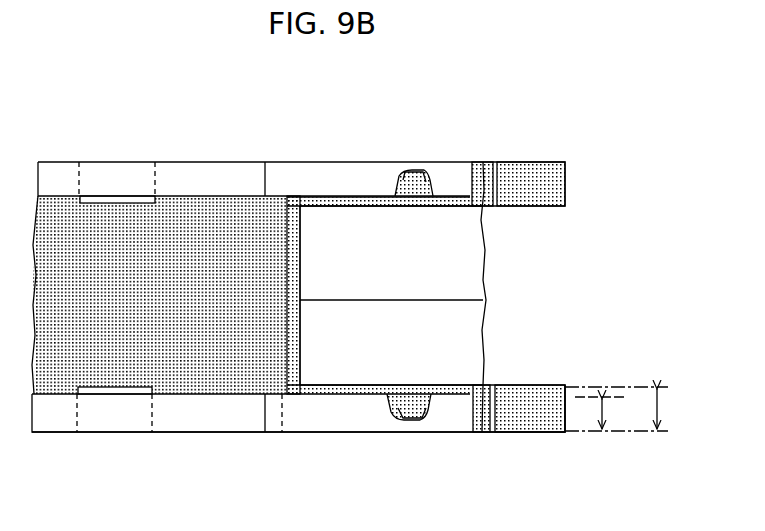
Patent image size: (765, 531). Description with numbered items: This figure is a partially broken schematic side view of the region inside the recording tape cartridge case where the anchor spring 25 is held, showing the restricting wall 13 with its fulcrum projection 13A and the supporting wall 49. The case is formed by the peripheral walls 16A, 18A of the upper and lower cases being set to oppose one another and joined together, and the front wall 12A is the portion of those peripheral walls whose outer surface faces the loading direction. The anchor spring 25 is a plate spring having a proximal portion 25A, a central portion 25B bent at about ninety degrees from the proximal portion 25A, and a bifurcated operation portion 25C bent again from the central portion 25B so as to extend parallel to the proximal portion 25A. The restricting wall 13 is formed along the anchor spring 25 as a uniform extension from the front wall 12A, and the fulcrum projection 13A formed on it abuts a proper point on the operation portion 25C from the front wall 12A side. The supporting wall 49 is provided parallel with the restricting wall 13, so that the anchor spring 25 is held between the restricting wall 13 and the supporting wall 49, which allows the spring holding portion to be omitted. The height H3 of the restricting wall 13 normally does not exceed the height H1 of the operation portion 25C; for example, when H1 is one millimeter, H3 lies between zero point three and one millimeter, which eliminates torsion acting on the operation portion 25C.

The front wall 12A is at (480, 297).
The restricting wall 13 is at (408, 285).
The fulcrum projection 13A is at (410, 168).
The peripheral wall of upper case 16A is at (465, 266).
The peripheral wall of lower case 18A is at (465, 361).
The anchor spring 25 is at (551, 435).
The proximal portion 25A is at (83, 350).
The central portion 25B is at (292, 304).
The operation portion 25C is at (515, 176).
The supporting wall 49 is at (272, 178).
The height of operation portion H1 is at (660, 412).
The height of restricting wall H3 is at (604, 410).